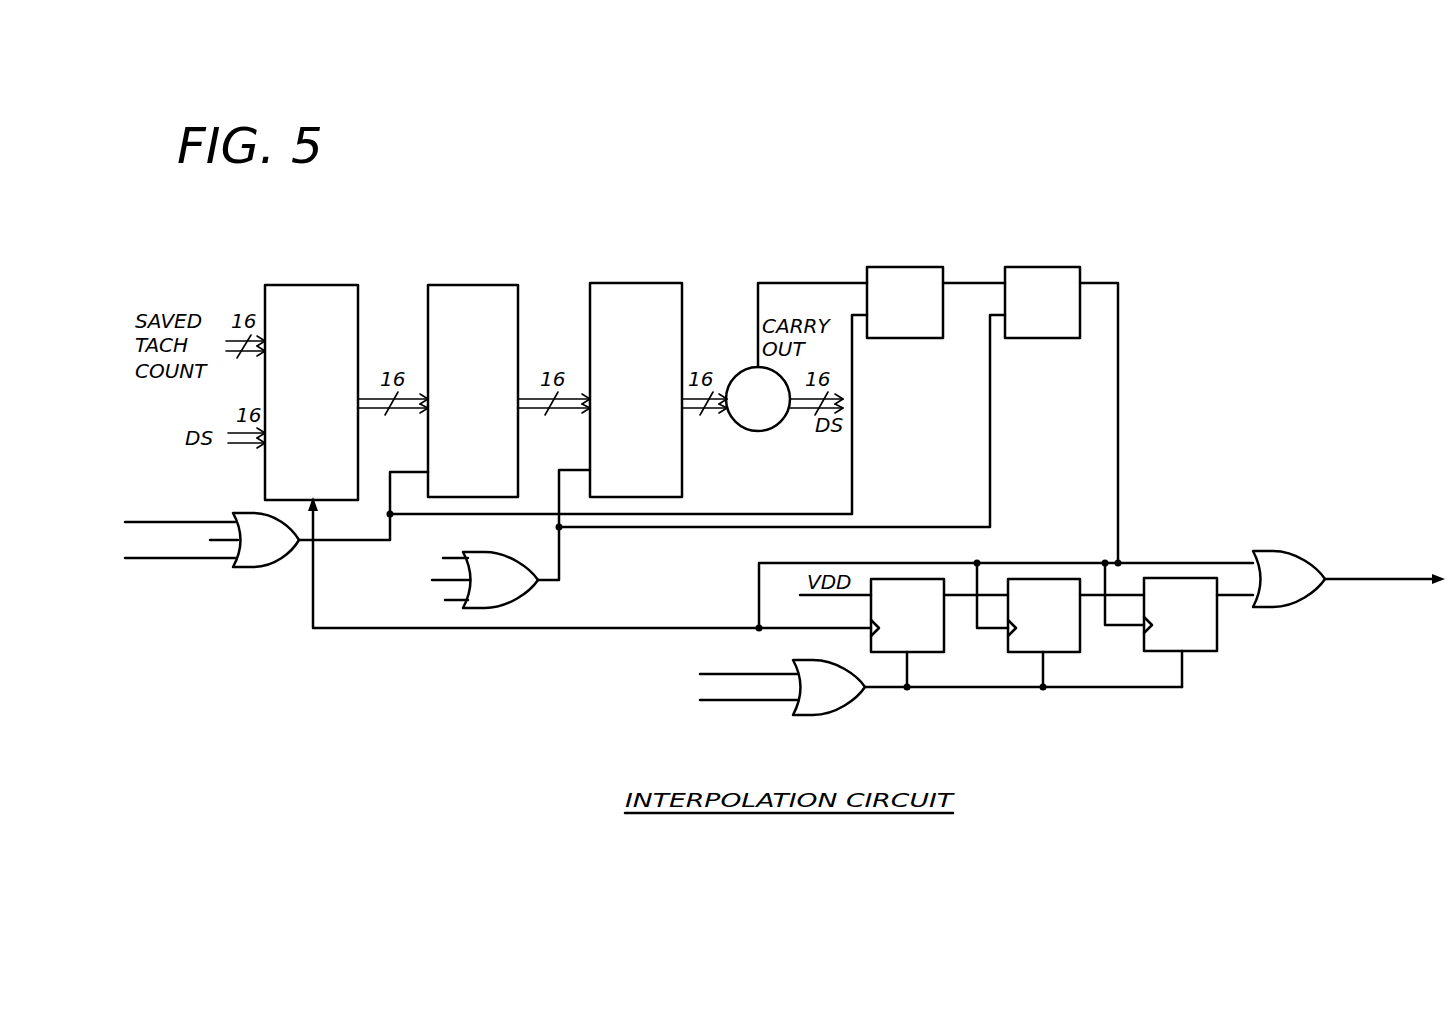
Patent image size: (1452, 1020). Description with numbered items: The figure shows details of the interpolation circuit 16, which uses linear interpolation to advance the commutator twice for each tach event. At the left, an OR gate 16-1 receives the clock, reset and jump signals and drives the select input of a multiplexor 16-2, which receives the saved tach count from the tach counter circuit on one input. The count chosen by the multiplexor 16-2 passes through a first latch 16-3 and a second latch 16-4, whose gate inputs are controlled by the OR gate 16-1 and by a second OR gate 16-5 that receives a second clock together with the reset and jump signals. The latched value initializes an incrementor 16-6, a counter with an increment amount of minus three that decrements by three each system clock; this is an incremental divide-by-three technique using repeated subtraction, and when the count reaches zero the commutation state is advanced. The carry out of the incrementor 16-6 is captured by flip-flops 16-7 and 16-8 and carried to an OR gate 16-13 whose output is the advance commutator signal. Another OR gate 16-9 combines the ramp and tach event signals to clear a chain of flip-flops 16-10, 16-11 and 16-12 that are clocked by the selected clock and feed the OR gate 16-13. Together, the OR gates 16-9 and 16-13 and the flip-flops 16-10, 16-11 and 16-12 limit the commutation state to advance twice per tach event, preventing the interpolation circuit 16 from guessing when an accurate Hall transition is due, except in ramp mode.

The interpolation circuit 16 is at (975, 229).
The OR gate 16-1 is at (262, 568).
The multiplexor 16-2 is at (318, 285).
The first latch 16-3 is at (483, 285).
The second latch 16-4 is at (643, 283).
The second OR gate 16-5 is at (530, 593).
The incrementor 16-6 is at (745, 431).
The flip-flop 16-7 is at (910, 338).
The flip-flop 16-8 is at (1053, 338).
The OR gate 16-9 is at (852, 705).
The flip-flop 16-10 is at (906, 579).
The flip-flop 16-11 is at (1046, 579).
The flip-flop 16-12 is at (1193, 578).
The OR gate 16-13 is at (1295, 607).